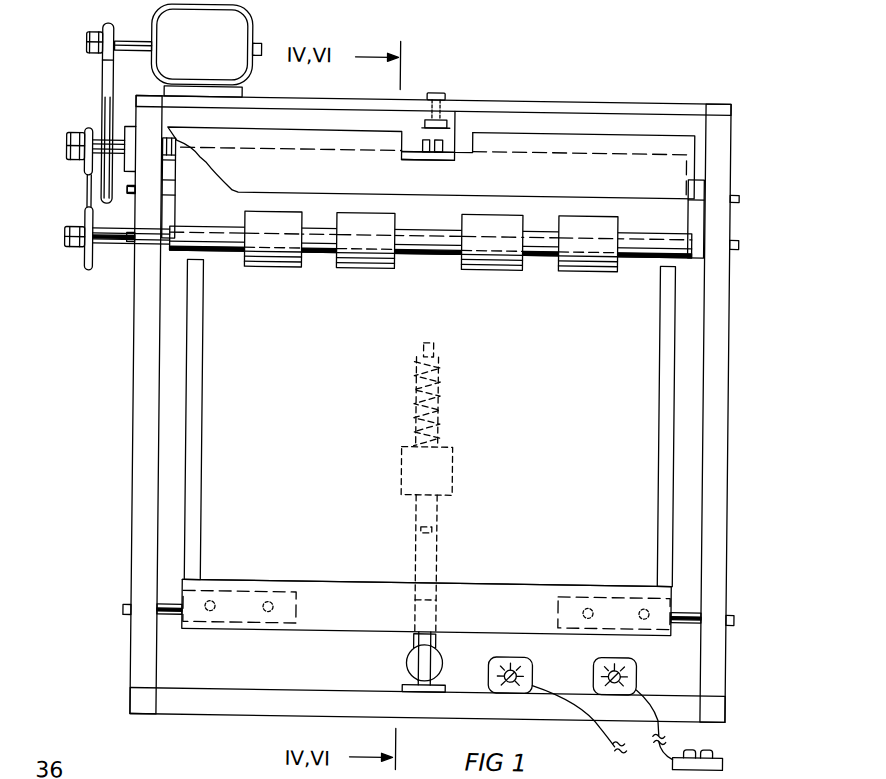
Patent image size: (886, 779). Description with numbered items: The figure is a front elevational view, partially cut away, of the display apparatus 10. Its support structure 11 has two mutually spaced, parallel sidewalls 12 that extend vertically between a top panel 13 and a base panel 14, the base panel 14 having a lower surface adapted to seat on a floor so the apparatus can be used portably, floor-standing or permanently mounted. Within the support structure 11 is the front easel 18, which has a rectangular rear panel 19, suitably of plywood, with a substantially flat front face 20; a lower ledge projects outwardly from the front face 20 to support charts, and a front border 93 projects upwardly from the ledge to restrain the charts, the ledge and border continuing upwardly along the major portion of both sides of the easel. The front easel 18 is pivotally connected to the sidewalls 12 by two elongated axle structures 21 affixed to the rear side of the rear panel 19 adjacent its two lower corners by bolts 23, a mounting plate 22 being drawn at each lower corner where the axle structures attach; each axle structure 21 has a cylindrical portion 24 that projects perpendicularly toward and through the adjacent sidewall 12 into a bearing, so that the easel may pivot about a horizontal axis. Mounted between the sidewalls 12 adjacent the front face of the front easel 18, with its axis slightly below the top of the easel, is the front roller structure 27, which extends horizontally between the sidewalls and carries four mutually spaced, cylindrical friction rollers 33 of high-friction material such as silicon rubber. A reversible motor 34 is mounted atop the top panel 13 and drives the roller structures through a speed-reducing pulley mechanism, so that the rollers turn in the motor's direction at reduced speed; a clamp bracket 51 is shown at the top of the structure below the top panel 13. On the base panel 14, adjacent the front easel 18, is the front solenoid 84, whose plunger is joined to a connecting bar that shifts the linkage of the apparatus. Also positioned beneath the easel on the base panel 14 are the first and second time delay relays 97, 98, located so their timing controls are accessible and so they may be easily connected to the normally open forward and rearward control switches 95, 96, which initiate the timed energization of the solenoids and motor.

The display apparatus 10 is at (392, 398).
The support structure 11 is at (133, 345).
The sidewalls 12 is at (728, 393).
The top panel 13 is at (613, 100).
The base panel 14 is at (198, 718).
The front easel 18 is at (322, 634).
The rear panel 19 is at (685, 257).
The front face 20 is at (571, 417).
The axle structures 21 is at (224, 589).
The mounting plate 22 is at (256, 596).
The bolts 23 is at (270, 616).
The cylindrical portion 24 is at (174, 619).
The front roller structure 27 is at (585, 270).
The friction roller 33 is at (494, 269).
The reversible motor 34 is at (249, 20).
The clamp bracket 51 is at (452, 115).
The front solenoid 84 is at (411, 671).
The front border 93 is at (518, 582).
The forward control switch 95 is at (694, 746).
The rearward control switch 96 is at (716, 746).
The first time delay relay 97 is at (550, 662).
The second time delay relay 98 is at (639, 670).